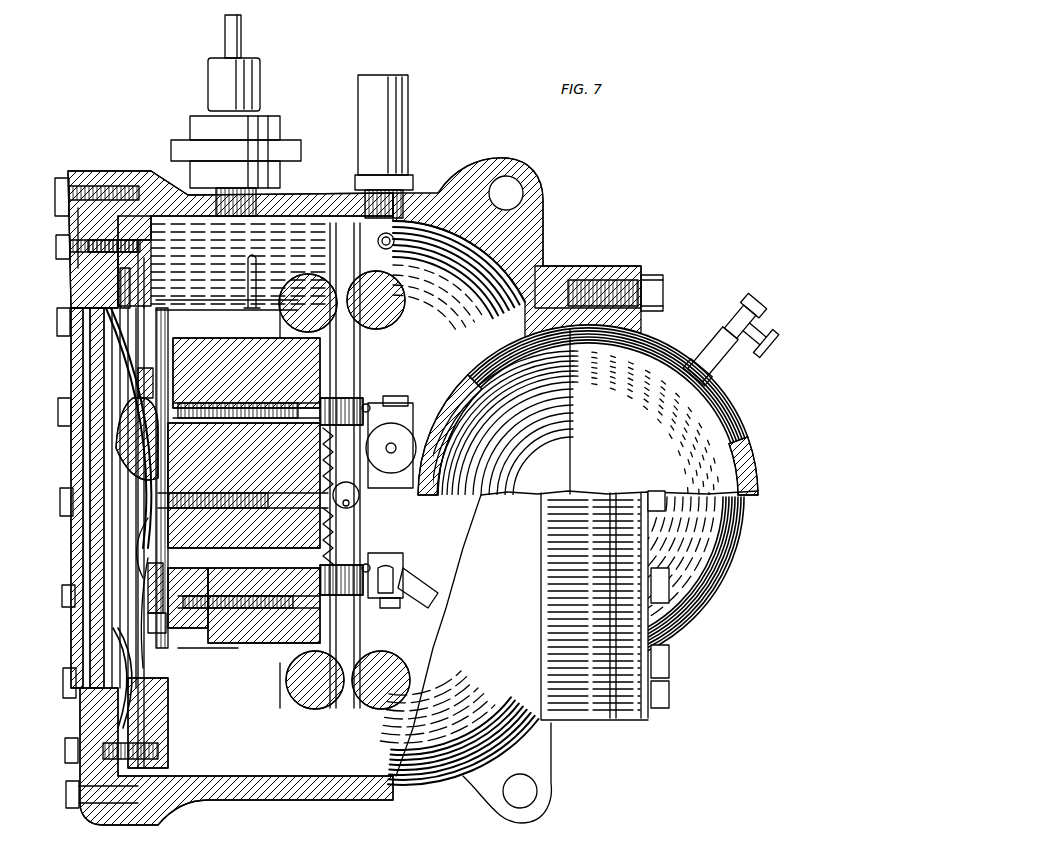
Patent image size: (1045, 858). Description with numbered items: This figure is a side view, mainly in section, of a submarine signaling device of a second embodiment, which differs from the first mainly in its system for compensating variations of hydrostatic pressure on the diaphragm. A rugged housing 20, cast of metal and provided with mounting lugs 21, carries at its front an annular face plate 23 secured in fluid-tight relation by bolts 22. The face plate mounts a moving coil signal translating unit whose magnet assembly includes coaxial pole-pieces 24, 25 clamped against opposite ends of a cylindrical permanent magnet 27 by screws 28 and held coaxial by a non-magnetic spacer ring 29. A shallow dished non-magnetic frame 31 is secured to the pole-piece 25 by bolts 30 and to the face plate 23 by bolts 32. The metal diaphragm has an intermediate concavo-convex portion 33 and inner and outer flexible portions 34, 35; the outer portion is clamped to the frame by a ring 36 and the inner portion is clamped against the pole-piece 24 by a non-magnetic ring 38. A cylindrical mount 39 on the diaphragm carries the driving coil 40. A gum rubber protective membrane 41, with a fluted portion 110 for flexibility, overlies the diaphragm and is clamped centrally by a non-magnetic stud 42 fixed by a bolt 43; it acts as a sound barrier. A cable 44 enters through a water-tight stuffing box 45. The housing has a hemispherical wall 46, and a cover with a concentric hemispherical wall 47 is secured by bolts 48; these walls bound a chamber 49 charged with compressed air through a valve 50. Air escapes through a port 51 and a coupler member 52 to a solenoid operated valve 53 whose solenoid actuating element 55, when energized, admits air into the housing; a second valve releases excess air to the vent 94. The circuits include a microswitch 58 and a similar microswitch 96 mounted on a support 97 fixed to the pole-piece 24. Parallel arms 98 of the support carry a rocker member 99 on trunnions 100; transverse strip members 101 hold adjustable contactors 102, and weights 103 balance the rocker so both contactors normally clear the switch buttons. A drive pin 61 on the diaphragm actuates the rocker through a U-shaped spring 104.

The housing 20 is at (318, 187).
The mounting lugs 21 is at (528, 175).
The bolts 22 is at (47, 185).
The annular face plate 23 is at (65, 212).
The pole-piece 24 is at (258, 580).
The pole-piece 25 is at (185, 640).
The cylindrical permanent magnet 27 is at (242, 636).
The screws 28 is at (248, 345).
The non-magnetic spacer ring 29 is at (215, 365).
The bolts 30 is at (130, 372).
The non-magnetic frame 31 is at (138, 270).
The bolts 32 is at (140, 240).
The intermediate concavo-convex portion 33 is at (143, 565).
The inner flexible portion 34 is at (138, 558).
The outer flexible portion 35 is at (140, 693).
The ring 36 is at (110, 268).
The non-magnetic ring 38 is at (130, 452).
The cylindrical mount 39 is at (170, 560).
The driving coil 40 is at (190, 555).
The protective membrane 41 is at (115, 410).
The non-magnetic stud 42 is at (140, 535).
The bolt 43 is at (140, 500).
The cable 44 is at (234, 26).
The stuffing box 45 is at (258, 120).
The hemispherical wall 46 is at (445, 360).
The hemispherical wall 47 is at (738, 433).
The bolts 48 is at (650, 278).
The chamber 49 is at (542, 458).
The valve 50 is at (715, 315).
The port 51 is at (430, 578).
The coupler member 52 is at (410, 590).
The solenoid operated valve 53 is at (375, 590).
The solenoid actuating element 55 is at (395, 414).
The microswitch 58 is at (337, 588).
The drive pin 61 is at (195, 298).
The vent 94 is at (400, 113).
The microswitch 96 is at (352, 392).
The support 97 is at (322, 436).
The parallel arms 98 is at (326, 510).
The rocker member 99 is at (352, 340).
The trunnions 100 is at (345, 480).
The transverse strip members 101 is at (360, 395).
The adjustable contactors 102 is at (380, 392).
The weights 103 is at (333, 315).
The U-shaped spring 104 is at (250, 256).
The fluted portion 110 is at (105, 650).